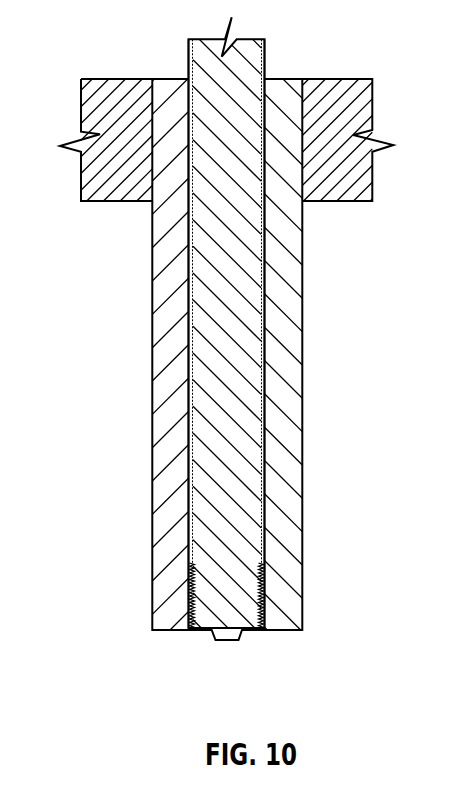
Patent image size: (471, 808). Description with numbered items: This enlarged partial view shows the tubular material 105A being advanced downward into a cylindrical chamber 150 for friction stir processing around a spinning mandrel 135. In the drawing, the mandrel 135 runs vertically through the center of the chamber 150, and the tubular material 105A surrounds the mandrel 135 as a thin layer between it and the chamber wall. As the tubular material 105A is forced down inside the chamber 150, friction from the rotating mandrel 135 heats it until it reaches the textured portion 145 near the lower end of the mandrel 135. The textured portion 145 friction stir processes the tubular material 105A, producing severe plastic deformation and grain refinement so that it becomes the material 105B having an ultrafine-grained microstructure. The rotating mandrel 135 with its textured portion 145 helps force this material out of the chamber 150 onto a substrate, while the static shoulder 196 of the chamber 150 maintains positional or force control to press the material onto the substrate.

The tubular material 105A is at (263, 475).
The material having the UFG microstructure 105B is at (264, 592).
The mandrel 135 is at (194, 380).
The textured portion 145 is at (190, 583).
The cylindrical chamber 150 is at (138, 466).
The shoulder 196 is at (152, 630).